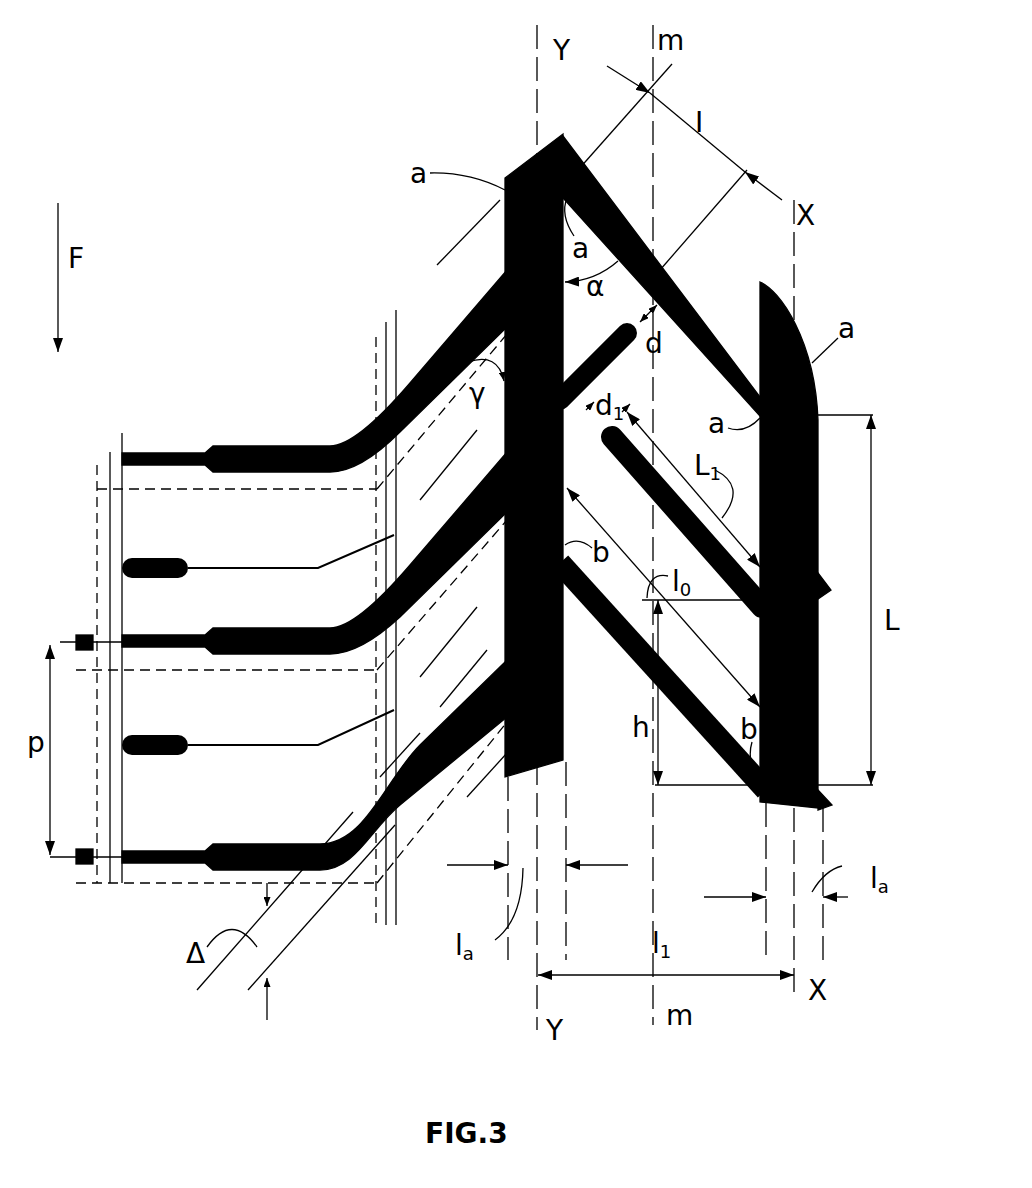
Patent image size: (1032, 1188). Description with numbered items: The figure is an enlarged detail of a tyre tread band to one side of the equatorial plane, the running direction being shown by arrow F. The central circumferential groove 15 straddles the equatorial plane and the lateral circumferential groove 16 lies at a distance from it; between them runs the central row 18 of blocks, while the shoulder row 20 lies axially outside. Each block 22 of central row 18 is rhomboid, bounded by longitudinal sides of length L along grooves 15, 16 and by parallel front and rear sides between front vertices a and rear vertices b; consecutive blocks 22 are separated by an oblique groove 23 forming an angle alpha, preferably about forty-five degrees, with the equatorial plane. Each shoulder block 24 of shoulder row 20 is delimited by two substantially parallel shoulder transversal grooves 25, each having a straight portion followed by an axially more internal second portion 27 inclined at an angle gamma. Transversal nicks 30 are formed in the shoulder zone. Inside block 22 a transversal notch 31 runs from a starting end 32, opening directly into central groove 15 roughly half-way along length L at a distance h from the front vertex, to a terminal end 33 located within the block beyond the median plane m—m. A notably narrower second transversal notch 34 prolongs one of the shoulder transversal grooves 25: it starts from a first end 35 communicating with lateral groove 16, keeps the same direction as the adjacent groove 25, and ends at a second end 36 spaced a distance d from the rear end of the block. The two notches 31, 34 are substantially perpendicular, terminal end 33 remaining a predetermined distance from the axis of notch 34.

The central circumferential groove 15 is at (790, 316).
The lateral circumferential groove 16 is at (523, 160).
The central row 18 is at (633, 210).
The shoulder row 20 is at (303, 268).
The block 22 is at (698, 385).
The oblique groove 23 is at (598, 618).
The shoulder block 24 is at (267, 545).
The shoulder transversal groove 25 is at (269, 657).
The second portion 27 is at (435, 358).
The transversal nick 30 is at (152, 733).
The transversal notch 31 is at (680, 529).
The starting end 32 is at (763, 617).
The terminal end 33 is at (605, 462).
The second transversal notch 34 is at (592, 374).
The first end 35 is at (565, 432).
The second end 36 is at (645, 288).